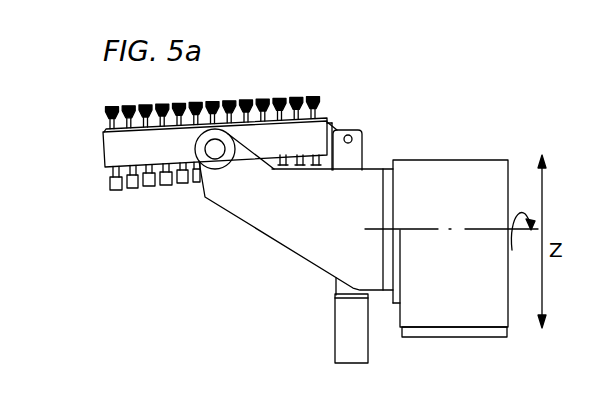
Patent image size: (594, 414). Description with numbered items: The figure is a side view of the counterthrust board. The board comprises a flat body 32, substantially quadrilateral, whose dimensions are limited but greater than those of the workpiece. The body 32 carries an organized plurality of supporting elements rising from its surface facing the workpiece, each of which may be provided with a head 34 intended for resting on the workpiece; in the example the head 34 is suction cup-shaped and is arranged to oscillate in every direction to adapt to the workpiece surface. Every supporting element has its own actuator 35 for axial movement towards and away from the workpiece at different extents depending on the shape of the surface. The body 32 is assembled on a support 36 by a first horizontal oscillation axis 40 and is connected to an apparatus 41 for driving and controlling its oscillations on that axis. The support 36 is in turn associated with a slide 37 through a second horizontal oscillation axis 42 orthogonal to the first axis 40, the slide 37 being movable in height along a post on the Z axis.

The flat body 32 is at (135, 157).
The head 34 is at (315, 95).
The actuator 35 is at (108, 180).
The support 36 is at (296, 248).
The slide 37 is at (447, 153).
The first horizontal oscillation axis 40 is at (215, 153).
The apparatus for driving and controlling oscillations 41 is at (343, 343).
The second horizontal oscillation axis 42 is at (480, 232).